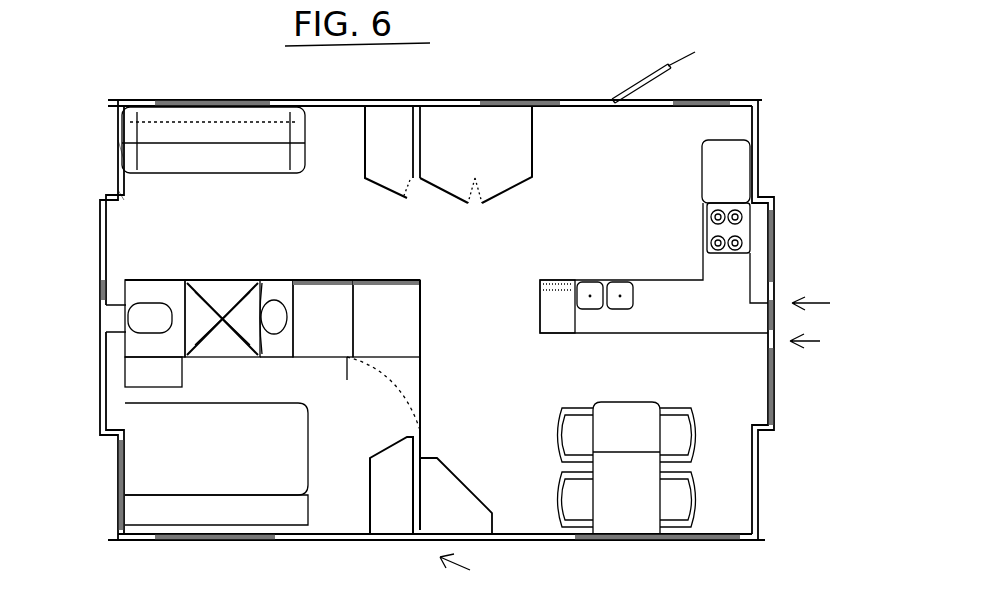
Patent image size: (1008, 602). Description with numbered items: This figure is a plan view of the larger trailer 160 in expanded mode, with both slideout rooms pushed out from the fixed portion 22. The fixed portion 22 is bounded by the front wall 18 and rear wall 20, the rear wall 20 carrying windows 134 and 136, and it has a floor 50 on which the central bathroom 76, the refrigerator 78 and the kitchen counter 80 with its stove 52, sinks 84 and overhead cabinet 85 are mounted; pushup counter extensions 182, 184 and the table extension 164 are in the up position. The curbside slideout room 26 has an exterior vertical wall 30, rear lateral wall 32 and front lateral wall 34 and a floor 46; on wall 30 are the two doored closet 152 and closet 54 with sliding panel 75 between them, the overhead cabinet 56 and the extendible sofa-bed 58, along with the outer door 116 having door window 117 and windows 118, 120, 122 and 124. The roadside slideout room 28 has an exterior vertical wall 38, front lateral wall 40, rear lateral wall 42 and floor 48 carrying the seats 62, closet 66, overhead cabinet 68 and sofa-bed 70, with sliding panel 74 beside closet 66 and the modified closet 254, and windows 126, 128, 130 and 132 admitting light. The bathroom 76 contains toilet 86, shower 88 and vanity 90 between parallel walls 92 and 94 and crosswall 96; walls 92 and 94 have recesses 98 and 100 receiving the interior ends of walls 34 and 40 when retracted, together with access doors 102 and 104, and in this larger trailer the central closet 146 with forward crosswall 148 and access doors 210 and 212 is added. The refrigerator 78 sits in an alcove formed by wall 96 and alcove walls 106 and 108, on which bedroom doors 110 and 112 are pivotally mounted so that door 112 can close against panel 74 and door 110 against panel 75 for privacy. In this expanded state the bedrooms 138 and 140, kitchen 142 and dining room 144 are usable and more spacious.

The front wall 18 is at (100, 255).
The rear wall 20 is at (770, 300).
The fixed portion 22 is at (817, 343).
The curbside slideout room 26 is at (495, 94).
The roadside slideout room 28 is at (470, 574).
The exterior vertical wall 30 is at (372, 100).
The rear lateral wall 32 is at (760, 195).
The front lateral wall 34 is at (116, 197).
The exterior vertical wall 38 is at (362, 541).
The front lateral wall 40 is at (118, 446).
The rear lateral wall 42 is at (760, 445).
The floor 46 is at (640, 157).
The floor 48 is at (540, 480).
The floor 50 is at (510, 313).
The closet 52 is at (712, 230).
The closet 54 is at (405, 163).
The overhead cabinet 56 is at (248, 142).
The extendible sofa-bed 58 is at (213, 141).
The seats 62 is at (685, 392).
The closet 66 is at (403, 498).
The overhead cabinet 68 is at (248, 524).
The sofa-bed 70 is at (262, 480).
The sliding panel 74 is at (420, 442).
The sliding panel 75 is at (420, 133).
The bathroom 76 is at (118, 316).
The refrigerator 78 is at (410, 333).
The kitchen counter 80 is at (620, 290).
The sinks 84 is at (590, 290).
The overhead cabinet 85 is at (692, 326).
The toilet 86 is at (160, 328).
The shower 88 is at (222, 318).
The vanity 90 is at (276, 318).
The parallel wall 92 is at (167, 280).
The parallel wall 94 is at (175, 370).
The crosswall 96 is at (358, 304).
The recess 98 is at (115, 295).
The recess 100 is at (113, 343).
The access door 102 is at (218, 297).
The access door 104 is at (237, 342).
The alcove wall 106 is at (420, 284).
The alcove wall 108 is at (415, 355).
The bedroom door 110 is at (380, 280).
The bedroom door 112 is at (421, 374).
The outer door 116 is at (698, 51).
The door window 117 is at (630, 77).
The window 118 is at (118, 152).
The window 120 is at (206, 100).
The window 122 is at (735, 100).
The window 124 is at (760, 155).
The window 126 is at (760, 485).
The window 128 is at (662, 542).
The window 130 is at (213, 542).
The window 132 is at (118, 485).
The window 134 is at (776, 245).
The window 136 is at (776, 378).
The bedroom 138 is at (365, 440).
The bedroom 140 is at (338, 218).
The kitchen 142 is at (672, 235).
The dining room 144 is at (627, 453).
The central closet 146 is at (332, 324).
The forward crosswall 148 is at (300, 297).
The two doored closet 152 is at (515, 161).
The trailer 160 is at (834, 305).
The table extension 164 is at (632, 436).
The pushup counter extension 182 is at (740, 172).
The pushup counter extension 184 is at (557, 306).
The access door 210 is at (315, 278).
The access door 212 is at (315, 357).
The closet 254 is at (470, 514).